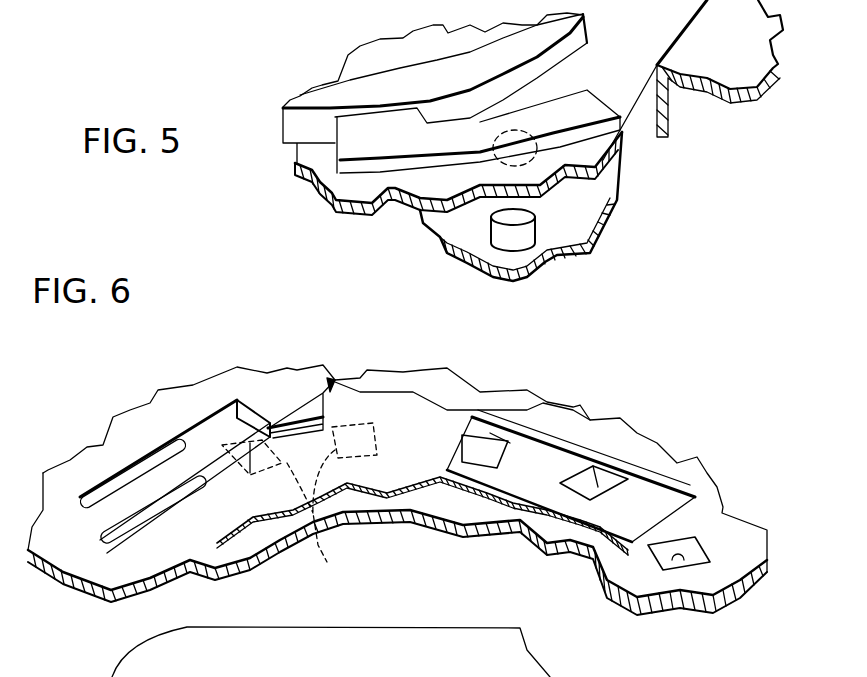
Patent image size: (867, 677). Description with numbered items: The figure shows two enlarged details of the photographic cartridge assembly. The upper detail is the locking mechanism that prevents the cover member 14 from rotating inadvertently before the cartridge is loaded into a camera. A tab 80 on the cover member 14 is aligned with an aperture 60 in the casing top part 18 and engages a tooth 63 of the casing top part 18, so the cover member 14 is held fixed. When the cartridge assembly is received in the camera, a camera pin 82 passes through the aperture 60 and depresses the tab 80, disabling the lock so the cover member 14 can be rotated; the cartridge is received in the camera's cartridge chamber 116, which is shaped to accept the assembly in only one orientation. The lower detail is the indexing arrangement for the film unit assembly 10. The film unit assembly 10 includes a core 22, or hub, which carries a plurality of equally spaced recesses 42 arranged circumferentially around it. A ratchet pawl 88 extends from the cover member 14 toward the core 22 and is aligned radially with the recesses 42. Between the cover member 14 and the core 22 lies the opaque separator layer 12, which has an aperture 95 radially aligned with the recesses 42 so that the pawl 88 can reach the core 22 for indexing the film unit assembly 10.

In FIG. 6, the film unit assembly 10 is at (753, 494).
In FIG. 6, the separator layer 12 is at (440, 413).
In FIG. 5, the cover member 14 is at (417, 92).
In FIG. 6, the cover member 14 is at (288, 397).
In FIG. 5, the casing top part 18 is at (713, 67).
In FIG. 6, the core 22 is at (720, 510).
In FIG. 6, the recesses 42 is at (598, 487).
In FIG. 5, the aperture 60 is at (530, 158).
In FIG. 5, the tooth 63 is at (606, 118).
In FIG. 5, the tab 80 is at (358, 145).
In FIG. 5, the camera pin 82 is at (520, 220).
In FIG. 6, the ratchet pawl 88 is at (182, 460).
In FIG. 6, the aperture 95 is at (557, 440).
In FIG. 5, the cartridge chamber 116 is at (597, 247).